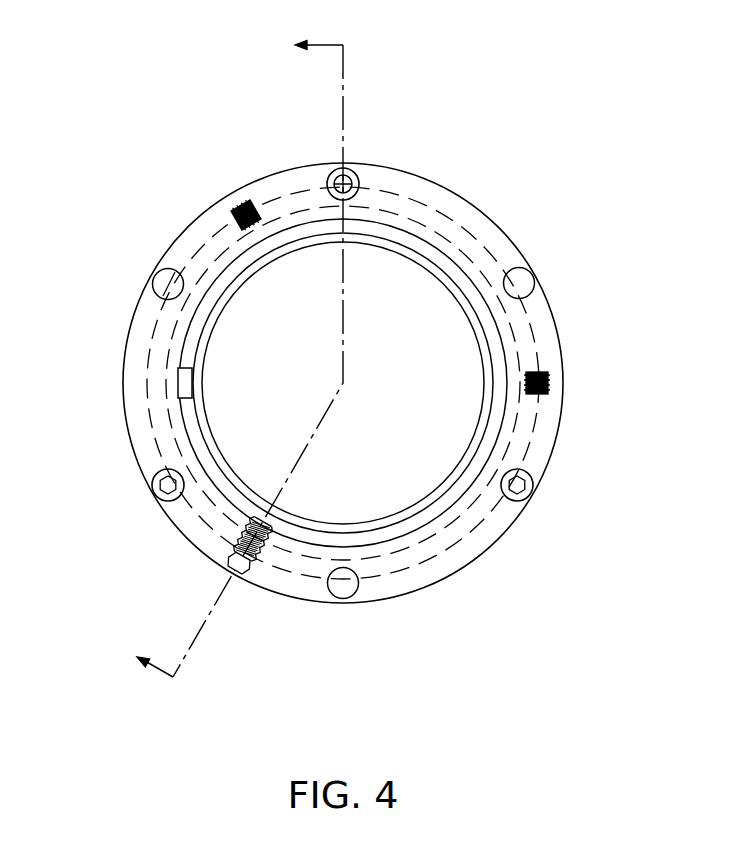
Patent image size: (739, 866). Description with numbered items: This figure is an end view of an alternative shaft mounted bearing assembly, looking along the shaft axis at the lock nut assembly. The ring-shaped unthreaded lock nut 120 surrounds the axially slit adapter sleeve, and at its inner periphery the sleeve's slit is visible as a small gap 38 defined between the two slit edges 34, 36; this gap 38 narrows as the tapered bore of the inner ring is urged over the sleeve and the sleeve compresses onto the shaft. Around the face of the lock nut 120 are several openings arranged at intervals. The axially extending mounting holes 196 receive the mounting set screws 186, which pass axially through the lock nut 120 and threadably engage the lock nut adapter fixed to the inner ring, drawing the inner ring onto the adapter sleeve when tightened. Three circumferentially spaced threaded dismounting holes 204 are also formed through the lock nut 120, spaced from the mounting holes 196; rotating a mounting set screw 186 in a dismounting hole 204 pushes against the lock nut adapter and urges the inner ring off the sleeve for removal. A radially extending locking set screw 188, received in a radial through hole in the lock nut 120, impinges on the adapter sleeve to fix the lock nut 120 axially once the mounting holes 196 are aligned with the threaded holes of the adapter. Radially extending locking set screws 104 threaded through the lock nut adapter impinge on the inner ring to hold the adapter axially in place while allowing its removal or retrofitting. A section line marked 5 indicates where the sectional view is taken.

The section line 5- 5 is at (234, 355).
The slit edge 34 is at (186, 368).
The slit edge 36 is at (186, 397).
The gap 38 is at (178, 383).
The locking set screw 104 is at (257, 204).
The lock nut 120 is at (556, 426).
The mounting set screw 186 is at (332, 177).
The locking set screw 188 is at (251, 574).
The mounting hole 196 is at (355, 177).
The threaded dismounting hole 204 is at (521, 267).